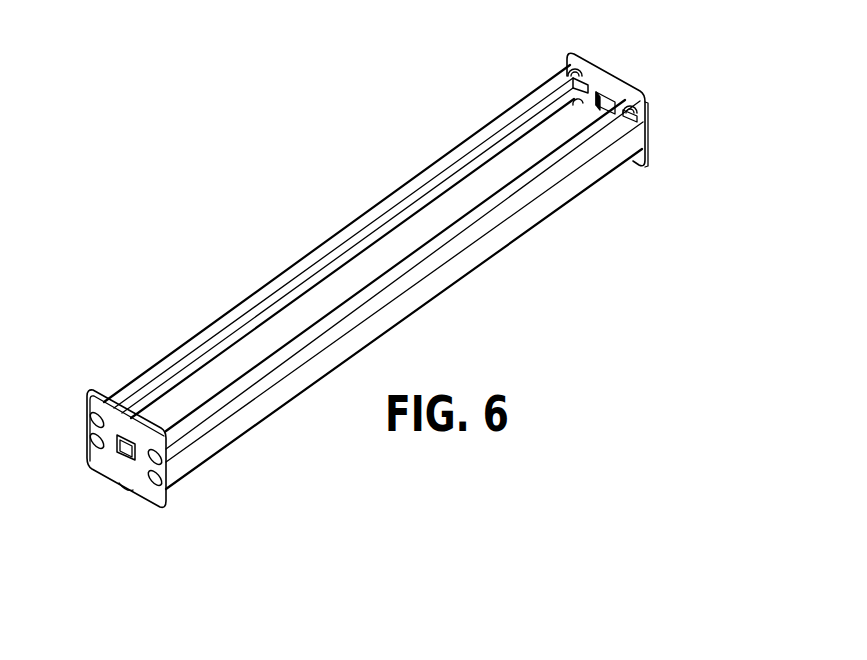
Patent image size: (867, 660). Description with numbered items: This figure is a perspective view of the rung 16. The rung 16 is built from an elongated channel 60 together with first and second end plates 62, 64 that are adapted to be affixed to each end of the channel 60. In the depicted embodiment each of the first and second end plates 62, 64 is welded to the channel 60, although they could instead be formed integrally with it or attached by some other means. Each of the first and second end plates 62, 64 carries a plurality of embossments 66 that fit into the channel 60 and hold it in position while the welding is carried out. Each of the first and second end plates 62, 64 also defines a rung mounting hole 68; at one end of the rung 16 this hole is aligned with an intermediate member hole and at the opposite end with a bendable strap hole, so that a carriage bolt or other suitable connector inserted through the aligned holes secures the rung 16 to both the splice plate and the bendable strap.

The rung 16 is at (527, 284).
The elongated channel 60 is at (289, 322).
The first end plate 62 is at (98, 462).
The second end plate 64 is at (630, 83).
The embossments 66 is at (570, 68).
The rung mounting hole 68 is at (124, 456).